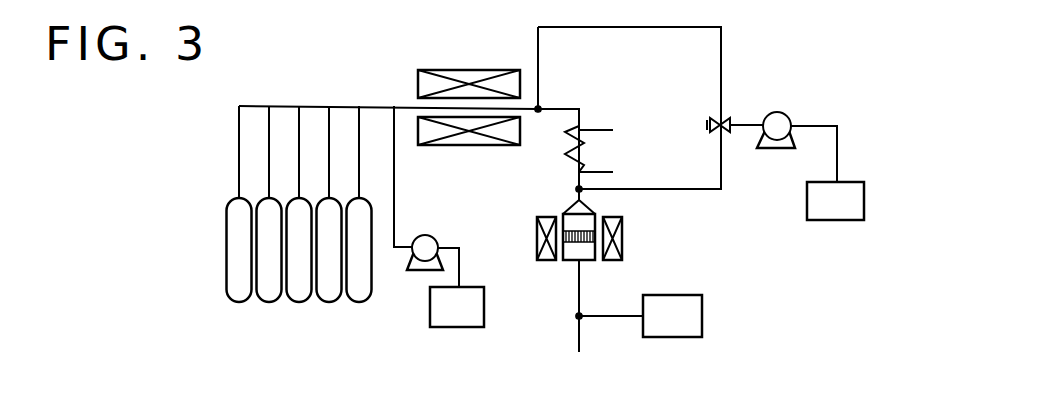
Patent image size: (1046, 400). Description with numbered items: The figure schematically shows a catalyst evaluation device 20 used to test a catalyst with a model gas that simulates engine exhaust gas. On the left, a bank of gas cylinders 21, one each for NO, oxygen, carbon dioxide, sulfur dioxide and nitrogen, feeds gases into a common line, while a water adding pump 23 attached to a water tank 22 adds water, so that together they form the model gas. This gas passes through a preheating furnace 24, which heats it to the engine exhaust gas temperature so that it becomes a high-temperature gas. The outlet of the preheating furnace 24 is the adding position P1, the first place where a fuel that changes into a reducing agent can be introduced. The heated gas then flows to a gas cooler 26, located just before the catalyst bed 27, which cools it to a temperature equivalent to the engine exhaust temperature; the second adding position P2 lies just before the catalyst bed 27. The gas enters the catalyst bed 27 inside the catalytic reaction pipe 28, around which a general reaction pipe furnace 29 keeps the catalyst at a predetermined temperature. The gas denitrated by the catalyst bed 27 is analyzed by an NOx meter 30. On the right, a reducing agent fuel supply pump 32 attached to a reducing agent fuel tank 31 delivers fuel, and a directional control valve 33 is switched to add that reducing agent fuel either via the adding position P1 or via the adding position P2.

The catalyst evaluation device 20 is at (749, 26).
The gas cylinders 21 is at (367, 306).
The water tank 22 is at (484, 312).
The water adding pump 23 is at (425, 234).
The preheating furnace 24 is at (459, 70).
The gas cooler 26 is at (613, 152).
The catalyst bed 27 is at (577, 228).
The catalytic reaction pipe 28 is at (568, 262).
The reaction pipe furnace 29 is at (626, 247).
The NOx meter 30 is at (702, 316).
The reducing agent fuel tank 31 is at (864, 203).
The reducing agent fuel supply pump 32 is at (770, 112).
The directional control valve 33 is at (725, 130).
The adding position P1 is at (542, 106).
The adding position P2 is at (575, 185).